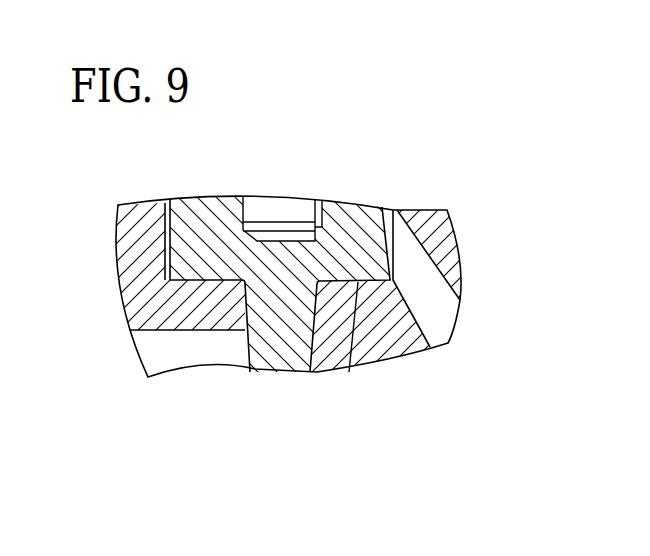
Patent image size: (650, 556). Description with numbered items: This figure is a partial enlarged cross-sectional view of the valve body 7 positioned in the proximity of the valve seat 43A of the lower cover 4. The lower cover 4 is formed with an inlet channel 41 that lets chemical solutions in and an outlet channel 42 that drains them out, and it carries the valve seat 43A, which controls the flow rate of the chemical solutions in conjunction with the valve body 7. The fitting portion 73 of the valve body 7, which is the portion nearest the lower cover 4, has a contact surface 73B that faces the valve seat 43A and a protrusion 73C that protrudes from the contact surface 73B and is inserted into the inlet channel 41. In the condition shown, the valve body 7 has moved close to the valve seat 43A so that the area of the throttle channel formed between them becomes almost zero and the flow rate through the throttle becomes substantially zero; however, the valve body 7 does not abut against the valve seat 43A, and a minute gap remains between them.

The lower cover 4 is at (101, 263).
The inlet channel 41 is at (150, 357).
The outlet channel 42 is at (445, 325).
The valve seat 43A is at (177, 282).
The valve body 7 is at (274, 158).
The fitting portion 73 is at (343, 203).
The contact surface 73B is at (348, 372).
The protrusion 73C is at (255, 363).